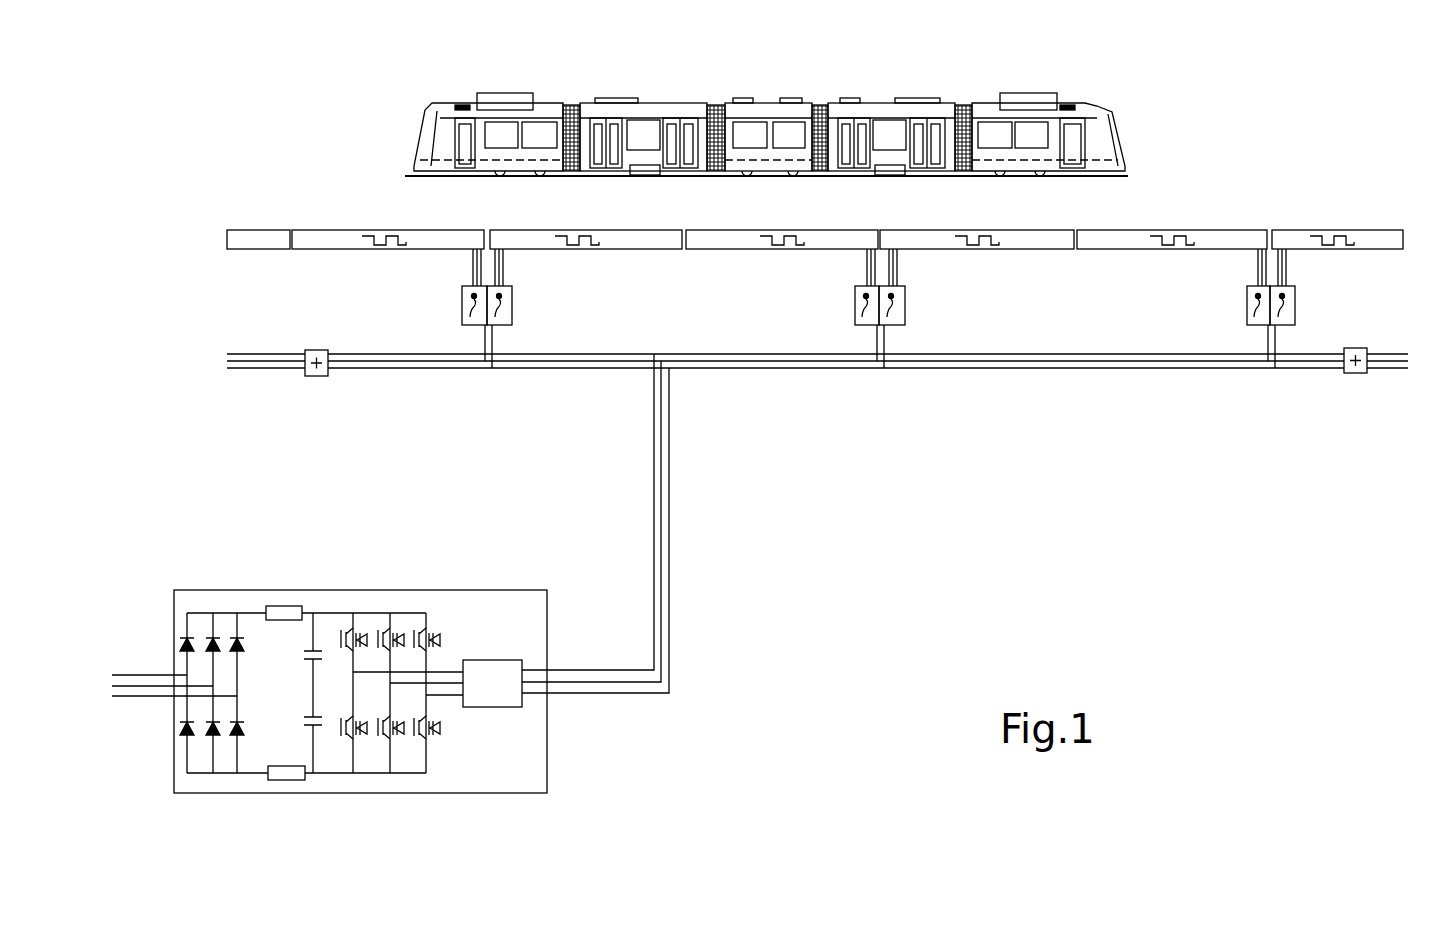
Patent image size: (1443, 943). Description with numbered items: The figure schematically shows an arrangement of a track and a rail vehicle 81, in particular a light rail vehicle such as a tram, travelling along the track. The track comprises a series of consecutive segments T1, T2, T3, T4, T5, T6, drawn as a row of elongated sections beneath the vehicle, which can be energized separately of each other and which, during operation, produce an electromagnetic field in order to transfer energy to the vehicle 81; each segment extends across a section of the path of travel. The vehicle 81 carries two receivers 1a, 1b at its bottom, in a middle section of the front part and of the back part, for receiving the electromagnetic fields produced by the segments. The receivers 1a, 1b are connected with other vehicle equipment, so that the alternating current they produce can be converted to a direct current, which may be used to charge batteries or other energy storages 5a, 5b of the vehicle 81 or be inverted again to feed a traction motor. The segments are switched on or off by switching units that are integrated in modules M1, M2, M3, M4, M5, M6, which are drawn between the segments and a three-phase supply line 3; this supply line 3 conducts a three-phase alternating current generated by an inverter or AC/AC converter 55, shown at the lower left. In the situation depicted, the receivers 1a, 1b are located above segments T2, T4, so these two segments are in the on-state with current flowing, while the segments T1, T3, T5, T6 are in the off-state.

The vehicle 81 is at (1090, 103).
The energy storage 5a is at (518, 96).
The energy storage 5b is at (1015, 98).
The receiver 1a is at (648, 175).
The receiver 1b is at (893, 175).
The segment T1 is at (313, 229).
The segment T2 is at (620, 251).
The segment T3 is at (803, 251).
The segment T4 is at (1030, 251).
The segment T5 is at (1200, 251).
The segment T6 is at (1380, 229).
The module M1 is at (461, 309).
The module M2 is at (513, 311).
The module M3 is at (854, 305).
The module M4 is at (906, 310).
The module M5 is at (1246, 305).
The module M6 is at (1296, 305).
The three-phase supply line 3 is at (740, 369).
The inverter or AC/AC converter 55 is at (447, 794).